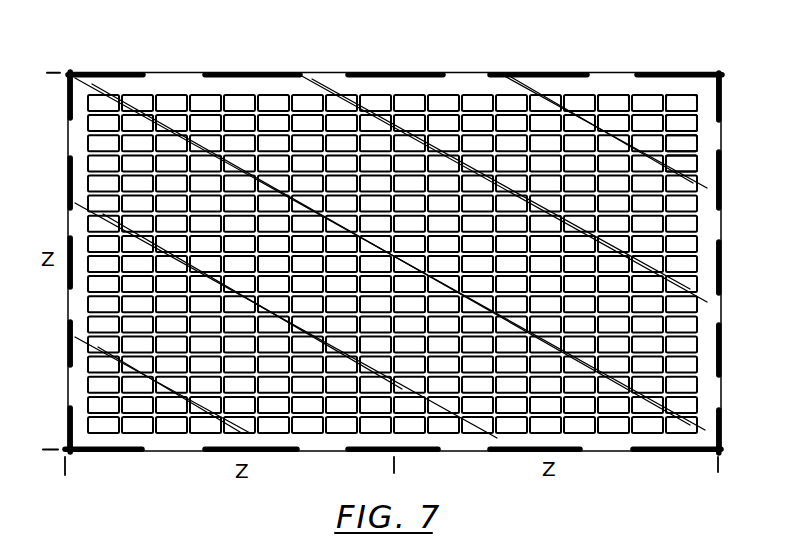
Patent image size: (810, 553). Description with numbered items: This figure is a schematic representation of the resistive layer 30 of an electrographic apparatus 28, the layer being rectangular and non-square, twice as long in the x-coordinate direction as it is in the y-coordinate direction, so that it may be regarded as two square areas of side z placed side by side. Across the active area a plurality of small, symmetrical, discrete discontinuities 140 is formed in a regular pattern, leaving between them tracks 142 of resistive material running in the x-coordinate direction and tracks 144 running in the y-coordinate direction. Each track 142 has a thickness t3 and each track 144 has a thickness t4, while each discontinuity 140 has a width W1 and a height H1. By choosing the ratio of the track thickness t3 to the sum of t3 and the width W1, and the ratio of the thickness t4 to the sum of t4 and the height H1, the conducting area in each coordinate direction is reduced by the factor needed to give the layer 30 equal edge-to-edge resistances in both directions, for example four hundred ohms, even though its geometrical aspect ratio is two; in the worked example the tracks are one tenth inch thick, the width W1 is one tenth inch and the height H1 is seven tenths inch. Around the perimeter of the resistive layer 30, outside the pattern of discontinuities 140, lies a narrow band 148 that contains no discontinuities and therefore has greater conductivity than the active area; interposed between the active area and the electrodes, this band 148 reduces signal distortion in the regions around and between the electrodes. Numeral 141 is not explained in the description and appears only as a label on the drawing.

The electrographic apparatus 28 is at (433, 54).
The resistive layer 30 is at (611, 72).
The discontinuities 140 is at (718, 83).
The cell wall 141 is at (690, 100).
The tracks 142 is at (699, 113).
The tracks 144 is at (665, 93).
The narrow band 148 is at (183, 82).
The height of discontinuity H1 is at (685, 93).
The width of discontinuity W1 is at (700, 140).
The thickness of track t3 is at (700, 167).
The thickness of track t4 is at (598, 94).